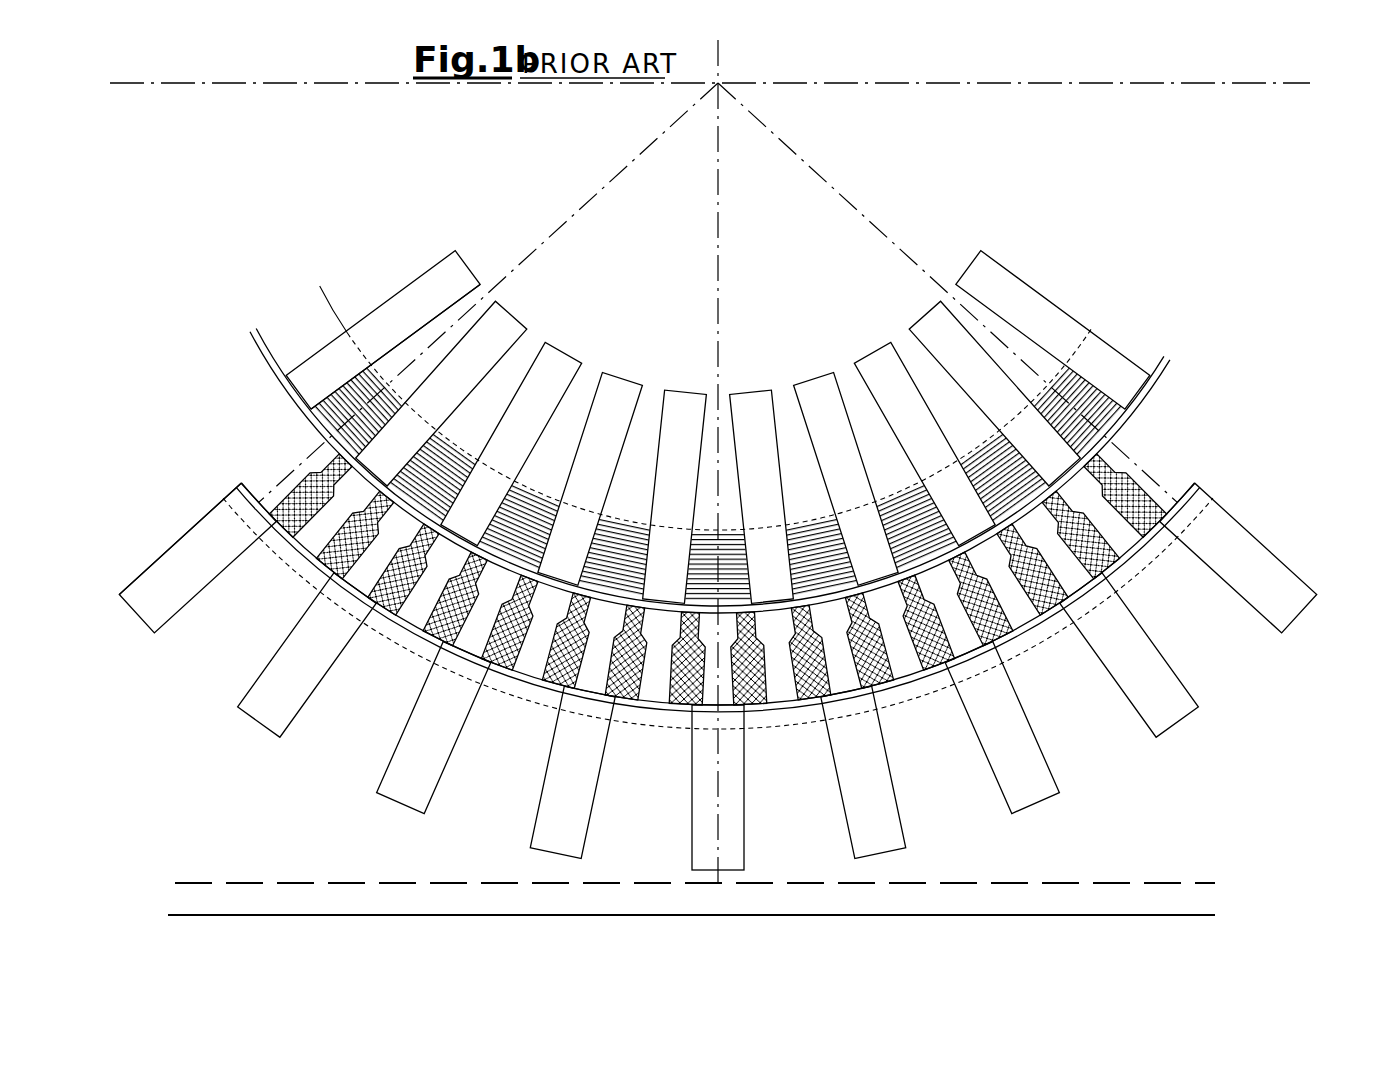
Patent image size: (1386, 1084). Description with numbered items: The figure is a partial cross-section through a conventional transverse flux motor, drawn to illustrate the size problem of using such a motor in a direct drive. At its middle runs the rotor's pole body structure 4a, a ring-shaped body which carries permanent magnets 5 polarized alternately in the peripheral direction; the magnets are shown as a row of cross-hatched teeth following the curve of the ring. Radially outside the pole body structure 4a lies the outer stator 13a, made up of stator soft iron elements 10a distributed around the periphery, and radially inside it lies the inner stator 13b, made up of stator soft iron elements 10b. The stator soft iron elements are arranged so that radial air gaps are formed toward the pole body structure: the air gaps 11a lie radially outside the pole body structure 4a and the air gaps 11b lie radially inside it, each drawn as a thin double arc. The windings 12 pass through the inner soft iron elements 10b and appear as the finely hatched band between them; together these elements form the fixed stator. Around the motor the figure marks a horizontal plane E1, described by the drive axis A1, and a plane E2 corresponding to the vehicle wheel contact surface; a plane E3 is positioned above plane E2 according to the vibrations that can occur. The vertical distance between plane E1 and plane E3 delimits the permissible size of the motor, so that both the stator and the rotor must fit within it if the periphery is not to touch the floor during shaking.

The axis A1 is at (262, 90).
The plane E1 is at (792, 85).
The plane E2 is at (1208, 915).
The plane E3 is at (1212, 883).
The stator soft iron elements 10a is at (1260, 523).
The stator soft iron elements 10b is at (1012, 288).
The outer stator 13a is at (1243, 602).
The inner stator 13b is at (1060, 292).
The air gaps 11a is at (1198, 485).
The air gaps 11b is at (1153, 383).
The windings 12 is at (1085, 392).
The pole body structure 4a is at (1147, 445).
The permanent magnets 5 is at (1143, 487).